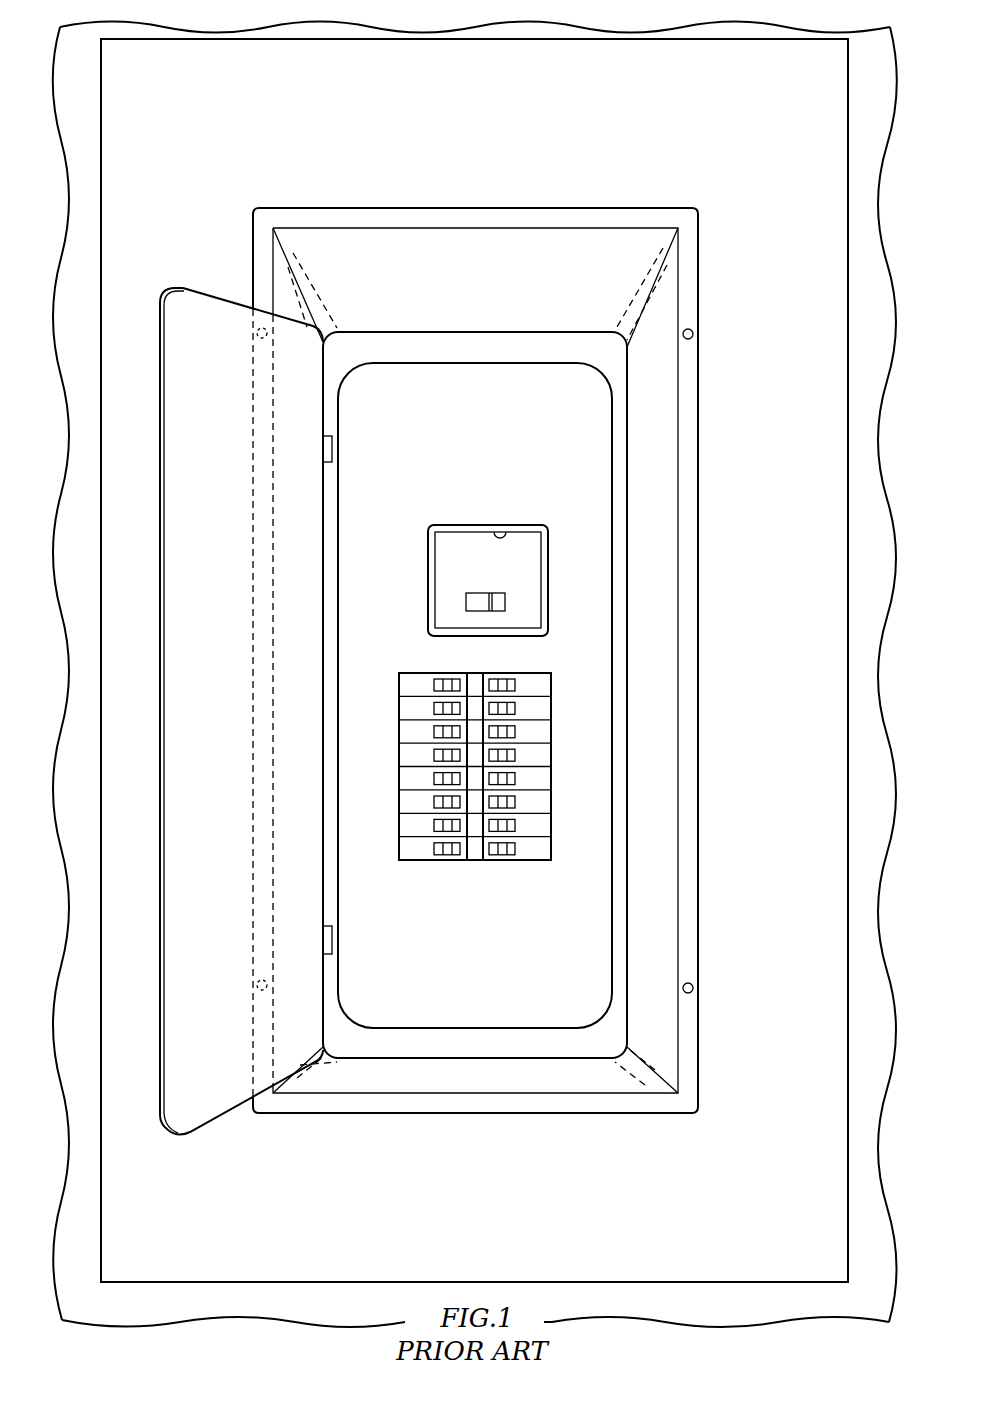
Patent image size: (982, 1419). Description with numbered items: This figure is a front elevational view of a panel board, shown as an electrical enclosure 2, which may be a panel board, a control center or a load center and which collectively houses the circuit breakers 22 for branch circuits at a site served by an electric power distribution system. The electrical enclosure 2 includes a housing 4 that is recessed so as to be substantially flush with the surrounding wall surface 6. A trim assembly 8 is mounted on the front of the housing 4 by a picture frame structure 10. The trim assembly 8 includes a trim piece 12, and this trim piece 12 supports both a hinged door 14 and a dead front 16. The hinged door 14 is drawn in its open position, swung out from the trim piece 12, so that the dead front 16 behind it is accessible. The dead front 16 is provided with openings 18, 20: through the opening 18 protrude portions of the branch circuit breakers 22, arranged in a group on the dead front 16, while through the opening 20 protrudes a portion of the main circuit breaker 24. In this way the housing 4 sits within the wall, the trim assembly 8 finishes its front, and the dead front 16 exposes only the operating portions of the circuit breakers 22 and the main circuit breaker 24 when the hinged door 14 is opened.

The electrical enclosure 2 is at (764, 117).
The housing 4 is at (470, 224).
The wall surface 6 is at (70, 52).
The trim assembly 8 is at (722, 234).
The picture frame structure 10 is at (827, 123).
The trim piece 12 is at (665, 562).
The hinged door 14 is at (213, 314).
The dead front 16 is at (595, 445).
The opening 18 is at (545, 760).
The opening 20 is at (503, 533).
The circuit breakers 22 is at (403, 737).
The main circuit breaker 24 is at (525, 562).